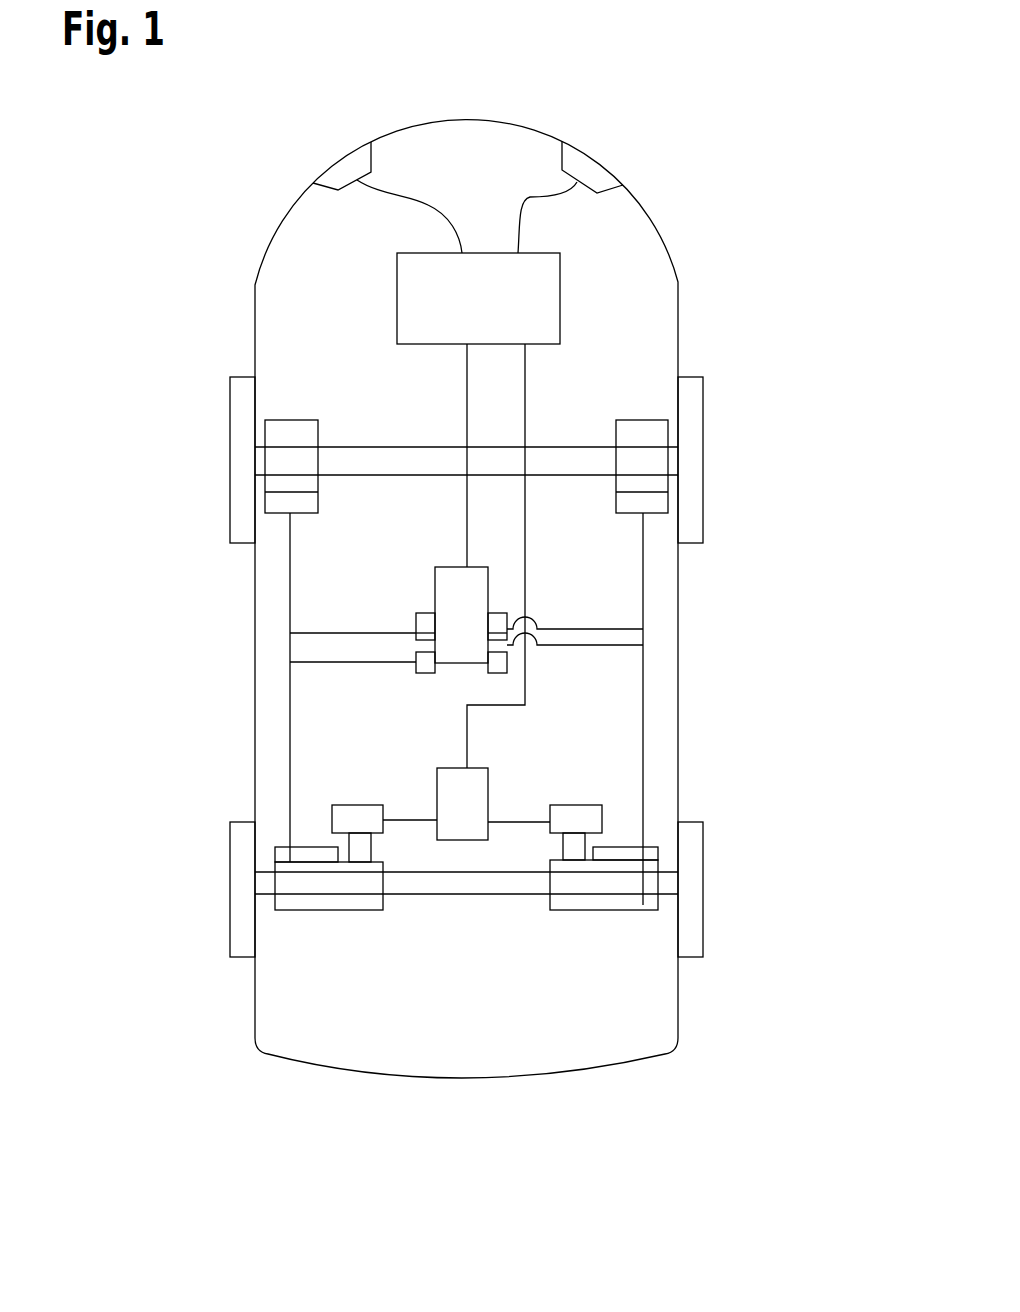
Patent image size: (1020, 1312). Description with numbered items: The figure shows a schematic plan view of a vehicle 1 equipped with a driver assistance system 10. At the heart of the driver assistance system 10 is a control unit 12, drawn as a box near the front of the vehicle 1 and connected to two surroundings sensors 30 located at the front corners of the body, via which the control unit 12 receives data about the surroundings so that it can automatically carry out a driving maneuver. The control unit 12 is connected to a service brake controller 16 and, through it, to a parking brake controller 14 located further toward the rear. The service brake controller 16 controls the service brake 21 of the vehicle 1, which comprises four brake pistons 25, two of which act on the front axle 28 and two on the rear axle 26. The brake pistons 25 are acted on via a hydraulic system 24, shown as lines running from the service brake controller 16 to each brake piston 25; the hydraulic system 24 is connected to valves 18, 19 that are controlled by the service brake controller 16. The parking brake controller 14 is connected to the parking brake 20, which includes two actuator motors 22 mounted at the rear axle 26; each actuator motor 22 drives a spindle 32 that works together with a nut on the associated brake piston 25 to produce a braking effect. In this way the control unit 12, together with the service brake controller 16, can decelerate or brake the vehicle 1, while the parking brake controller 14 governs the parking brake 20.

The vehicle 1 is at (650, 280).
The driver assistance system 10 is at (592, 374).
The control unit 12 is at (542, 273).
The parking brake controller 14 is at (463, 788).
The service brake controller 16 is at (463, 588).
The valve 18 is at (423, 622).
The valve 19 is at (423, 668).
The parking brake 20 is at (423, 838).
The service brake 21 is at (405, 574).
The actuator motor 22 is at (347, 817).
The hydraulic system 24 is at (278, 503).
The brake piston 25 is at (285, 438).
The rear axle 26 is at (483, 885).
The front axle 28 is at (357, 457).
The surroundings sensor 30 is at (344, 165).
The spindle 32 is at (358, 843).